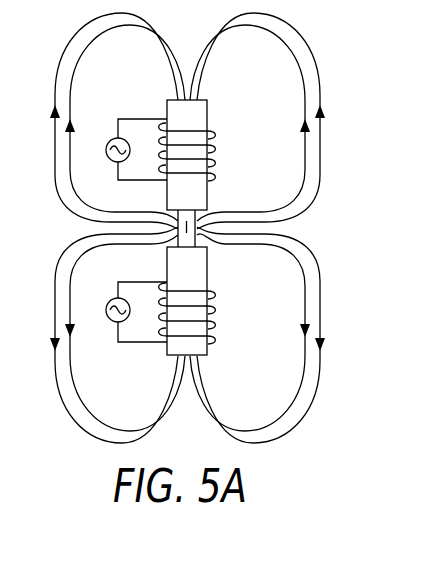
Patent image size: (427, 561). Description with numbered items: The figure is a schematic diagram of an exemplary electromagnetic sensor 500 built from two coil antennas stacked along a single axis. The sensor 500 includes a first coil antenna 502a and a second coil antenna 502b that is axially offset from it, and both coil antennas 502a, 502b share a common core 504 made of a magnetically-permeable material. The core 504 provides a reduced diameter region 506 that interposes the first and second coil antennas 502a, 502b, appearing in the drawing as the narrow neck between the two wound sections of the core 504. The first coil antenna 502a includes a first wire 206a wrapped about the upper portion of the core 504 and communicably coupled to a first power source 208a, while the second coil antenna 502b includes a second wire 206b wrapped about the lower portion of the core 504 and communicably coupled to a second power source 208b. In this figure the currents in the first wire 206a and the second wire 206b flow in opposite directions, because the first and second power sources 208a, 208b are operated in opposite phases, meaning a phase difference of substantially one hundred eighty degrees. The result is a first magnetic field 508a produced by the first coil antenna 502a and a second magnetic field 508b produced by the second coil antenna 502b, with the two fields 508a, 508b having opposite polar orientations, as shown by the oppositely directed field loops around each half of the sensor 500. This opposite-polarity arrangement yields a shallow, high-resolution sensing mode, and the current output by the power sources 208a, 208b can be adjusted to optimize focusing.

The electromagnetic sensor 500 is at (52, 52).
The first coil antenna 502a is at (228, 111).
The second coil antenna 502b is at (232, 293).
The first wire 206a is at (210, 135).
The second wire 206b is at (210, 310).
The first power source 208a is at (111, 140).
The second power source 208b is at (111, 322).
The core 504 is at (207, 193).
The reduced diameter region 506 is at (95, 233).
The first magnetic field 508a is at (332, 102).
The second magnetic field 508b is at (328, 376).